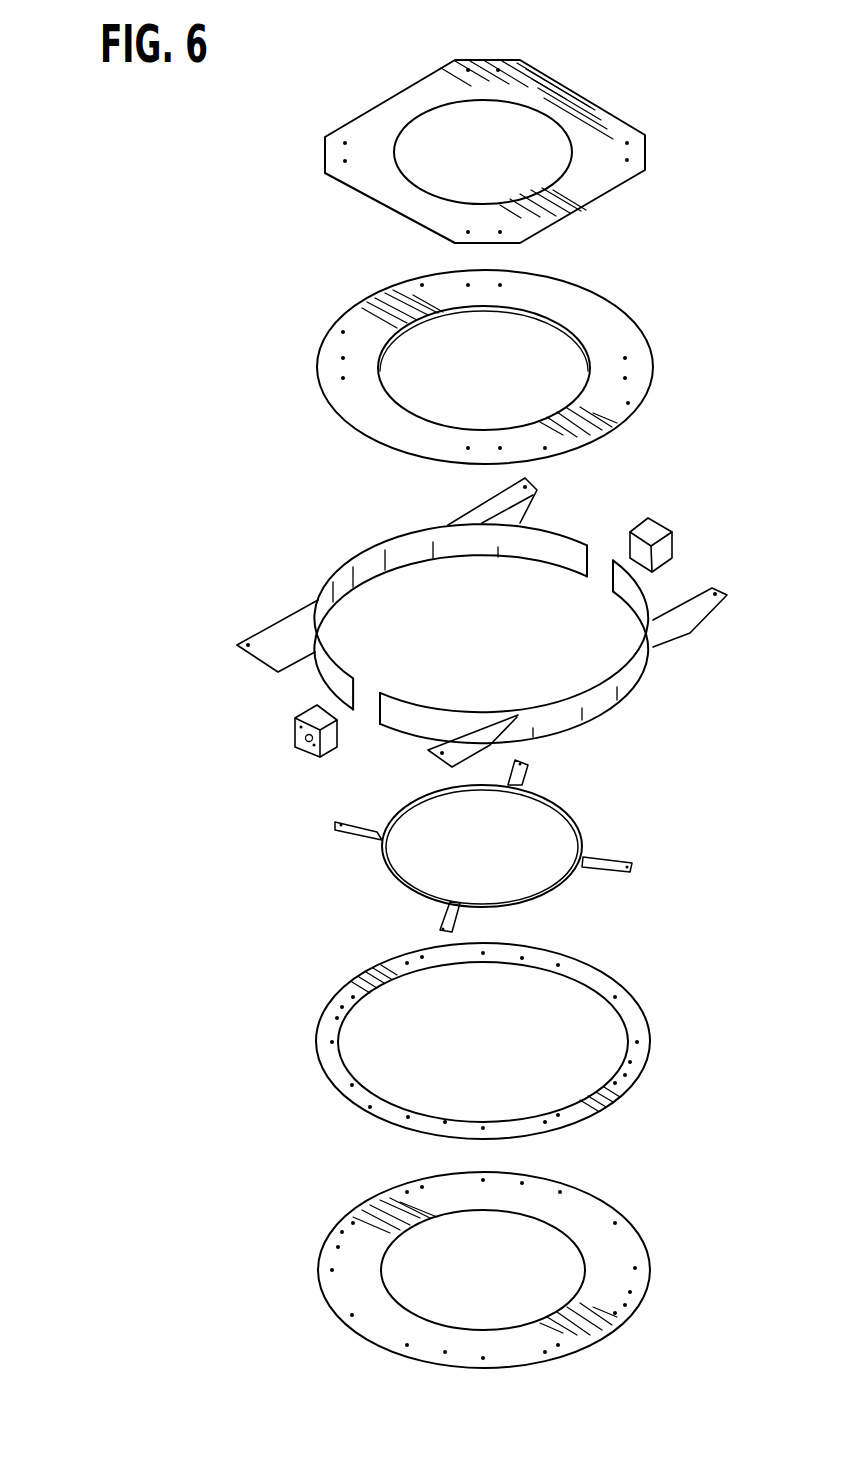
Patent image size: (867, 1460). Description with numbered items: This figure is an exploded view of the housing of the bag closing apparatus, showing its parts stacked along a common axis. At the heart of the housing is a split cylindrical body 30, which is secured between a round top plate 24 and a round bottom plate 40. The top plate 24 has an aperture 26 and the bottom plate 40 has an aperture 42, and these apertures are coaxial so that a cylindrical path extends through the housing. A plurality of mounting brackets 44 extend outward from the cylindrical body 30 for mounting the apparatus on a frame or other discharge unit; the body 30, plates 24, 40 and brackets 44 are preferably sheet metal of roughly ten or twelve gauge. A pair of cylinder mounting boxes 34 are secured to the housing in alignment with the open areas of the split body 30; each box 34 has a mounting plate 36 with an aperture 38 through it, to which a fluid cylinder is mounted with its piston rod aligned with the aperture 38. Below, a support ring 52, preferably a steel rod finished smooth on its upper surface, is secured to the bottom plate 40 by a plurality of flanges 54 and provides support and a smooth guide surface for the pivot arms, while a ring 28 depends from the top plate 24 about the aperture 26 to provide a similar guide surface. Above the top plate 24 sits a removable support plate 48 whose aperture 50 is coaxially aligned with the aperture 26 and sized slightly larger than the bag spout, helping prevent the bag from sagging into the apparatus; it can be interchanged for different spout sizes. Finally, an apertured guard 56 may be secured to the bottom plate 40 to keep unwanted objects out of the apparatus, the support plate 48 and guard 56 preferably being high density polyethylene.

The top plate 24 is at (610, 313).
The aperture 26 is at (457, 403).
The ring 28 is at (440, 320).
The split cylindrical body 30 is at (322, 567).
The cylinder mounting box 34 is at (672, 520).
The mounting plate 36 is at (297, 723).
The aperture 38 is at (297, 747).
The bottom plate 40 is at (637, 968).
The aperture 42 is at (587, 1043).
The mounting bracket 44 is at (267, 635).
The support plate 48 is at (370, 118).
The aperture 50 is at (432, 137).
The support ring 52 is at (560, 887).
The flange 54 is at (523, 772).
The guard 56 is at (630, 1247).